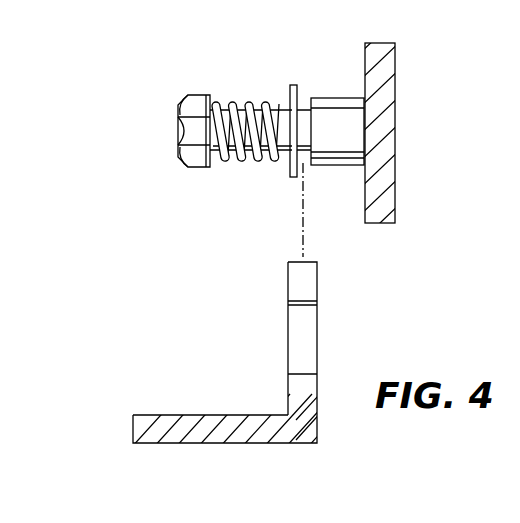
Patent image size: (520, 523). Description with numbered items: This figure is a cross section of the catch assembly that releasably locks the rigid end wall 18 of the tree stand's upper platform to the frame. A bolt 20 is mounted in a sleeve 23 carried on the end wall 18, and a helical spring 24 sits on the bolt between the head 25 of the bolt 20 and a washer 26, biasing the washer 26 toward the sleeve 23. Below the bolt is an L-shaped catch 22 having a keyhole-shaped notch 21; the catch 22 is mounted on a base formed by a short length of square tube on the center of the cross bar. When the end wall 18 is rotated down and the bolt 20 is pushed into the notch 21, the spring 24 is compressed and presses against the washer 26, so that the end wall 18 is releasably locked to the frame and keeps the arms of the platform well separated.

The end wall 18 is at (383, 68).
The bolt 20 is at (306, 108).
The keyhole-shaped notch 21 is at (312, 330).
The L-shaped catch 22 is at (216, 415).
The sleeve 23 is at (343, 98).
The helical spring 24 is at (224, 102).
The head 25 is at (183, 160).
The washer 26 is at (295, 178).